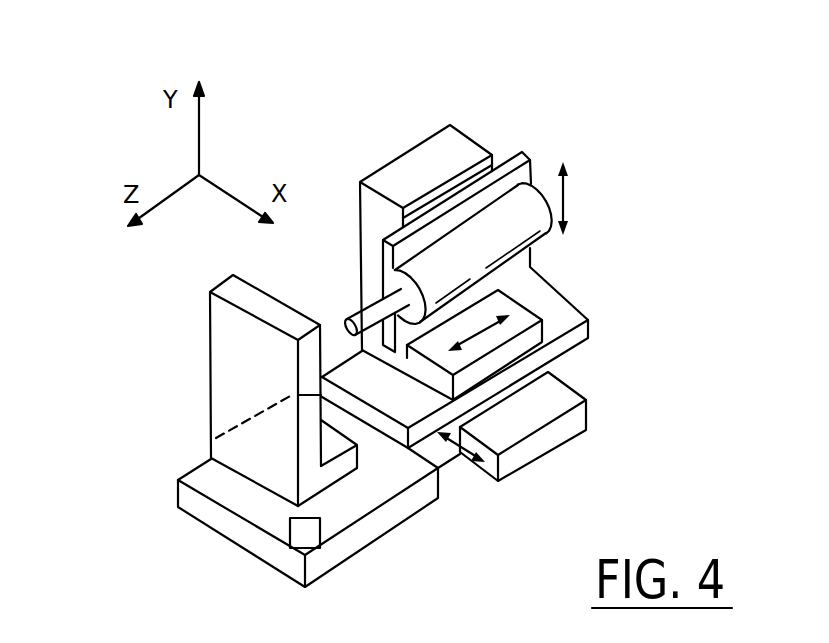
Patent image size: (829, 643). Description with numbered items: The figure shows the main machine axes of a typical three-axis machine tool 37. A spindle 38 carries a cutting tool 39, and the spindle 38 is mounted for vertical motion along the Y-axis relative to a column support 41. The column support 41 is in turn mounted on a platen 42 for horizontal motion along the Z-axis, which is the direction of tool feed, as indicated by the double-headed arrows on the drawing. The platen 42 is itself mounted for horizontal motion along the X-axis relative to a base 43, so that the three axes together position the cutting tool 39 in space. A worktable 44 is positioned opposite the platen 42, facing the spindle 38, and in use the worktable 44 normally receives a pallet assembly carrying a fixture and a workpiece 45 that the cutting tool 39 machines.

The three-axis machine tool 37 is at (491, 104).
The spindle 38 is at (541, 188).
The cutting tool 39 is at (347, 320).
The column support 41 is at (421, 157).
The platen 42 is at (578, 338).
The base 43 is at (575, 420).
The worktable 44 is at (208, 456).
The workpiece 45 is at (225, 347).